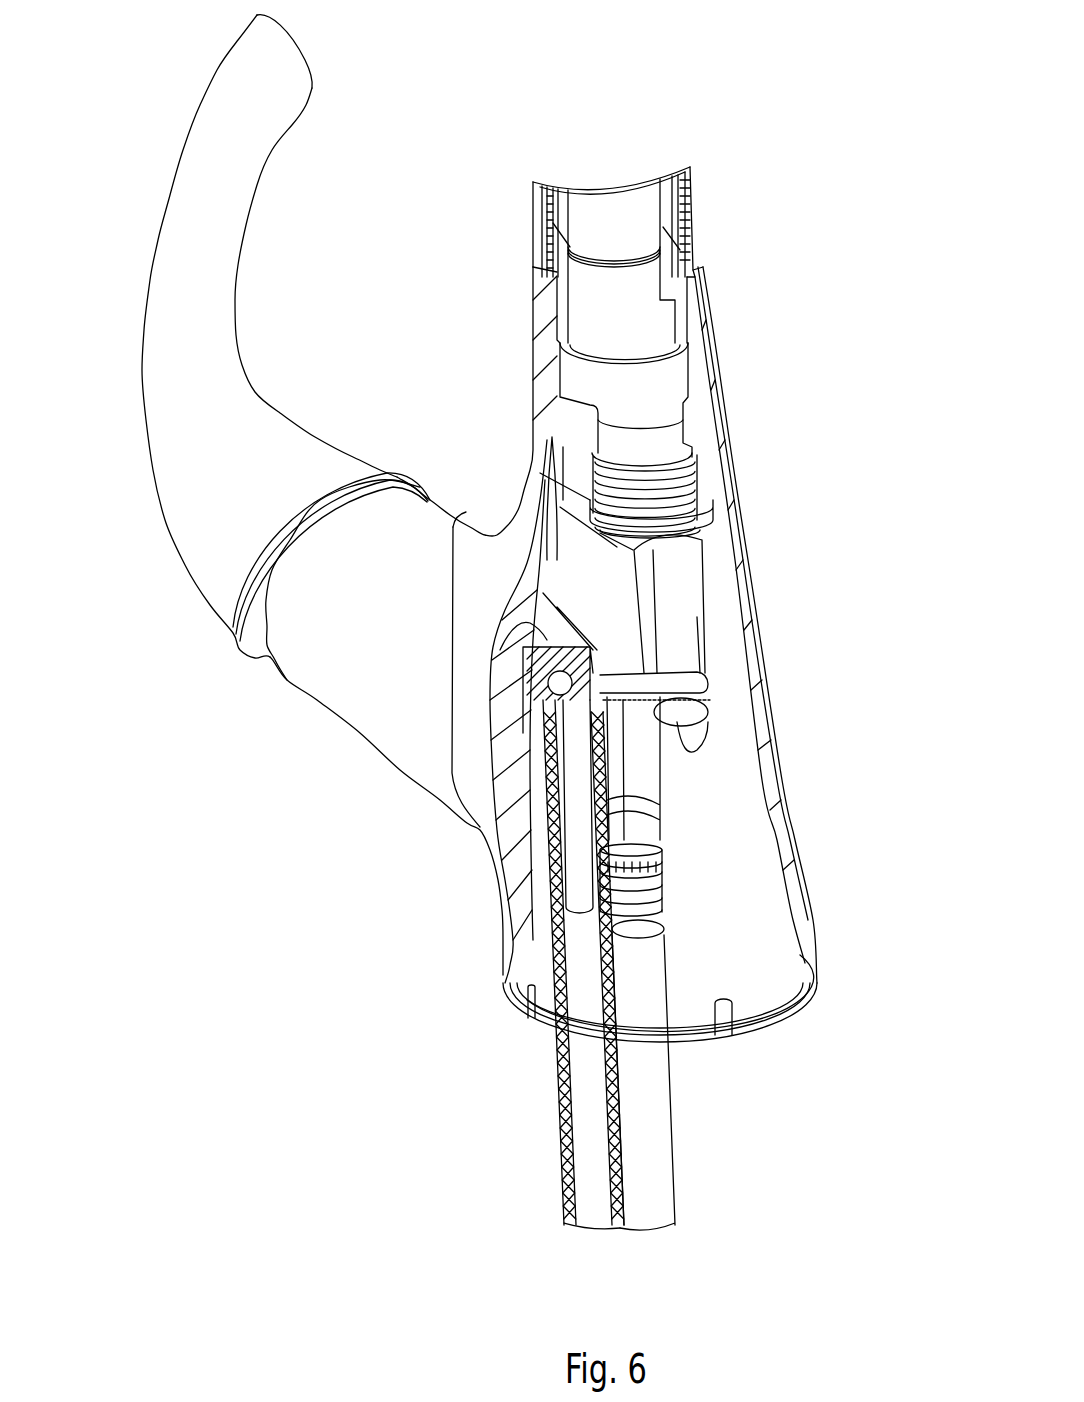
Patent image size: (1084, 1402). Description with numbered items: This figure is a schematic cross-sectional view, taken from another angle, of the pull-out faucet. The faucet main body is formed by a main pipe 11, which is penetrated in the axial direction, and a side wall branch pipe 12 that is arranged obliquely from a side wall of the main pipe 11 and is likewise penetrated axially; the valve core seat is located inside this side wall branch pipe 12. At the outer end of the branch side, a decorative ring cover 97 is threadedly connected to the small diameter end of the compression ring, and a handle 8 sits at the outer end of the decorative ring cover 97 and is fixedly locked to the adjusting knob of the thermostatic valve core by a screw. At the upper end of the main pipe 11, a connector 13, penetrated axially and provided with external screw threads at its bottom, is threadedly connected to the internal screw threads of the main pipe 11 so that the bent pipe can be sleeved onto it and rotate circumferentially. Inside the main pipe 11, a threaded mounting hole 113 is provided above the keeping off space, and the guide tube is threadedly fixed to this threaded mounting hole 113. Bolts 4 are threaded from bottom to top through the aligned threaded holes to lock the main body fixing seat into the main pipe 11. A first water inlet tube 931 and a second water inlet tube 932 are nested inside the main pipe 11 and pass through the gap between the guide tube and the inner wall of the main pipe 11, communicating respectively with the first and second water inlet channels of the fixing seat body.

The handle 8 is at (177, 450).
The decorative ring cover 97 is at (265, 593).
The side wall branch pipe 12 is at (320, 637).
The connector 13 is at (672, 250).
The threaded mounting hole 113 is at (672, 489).
The main pipe 11 is at (743, 638).
The bolt 4 is at (686, 712).
The first water inlet tube 931 is at (587, 1088).
The second water inlet tube 932 is at (643, 1120).